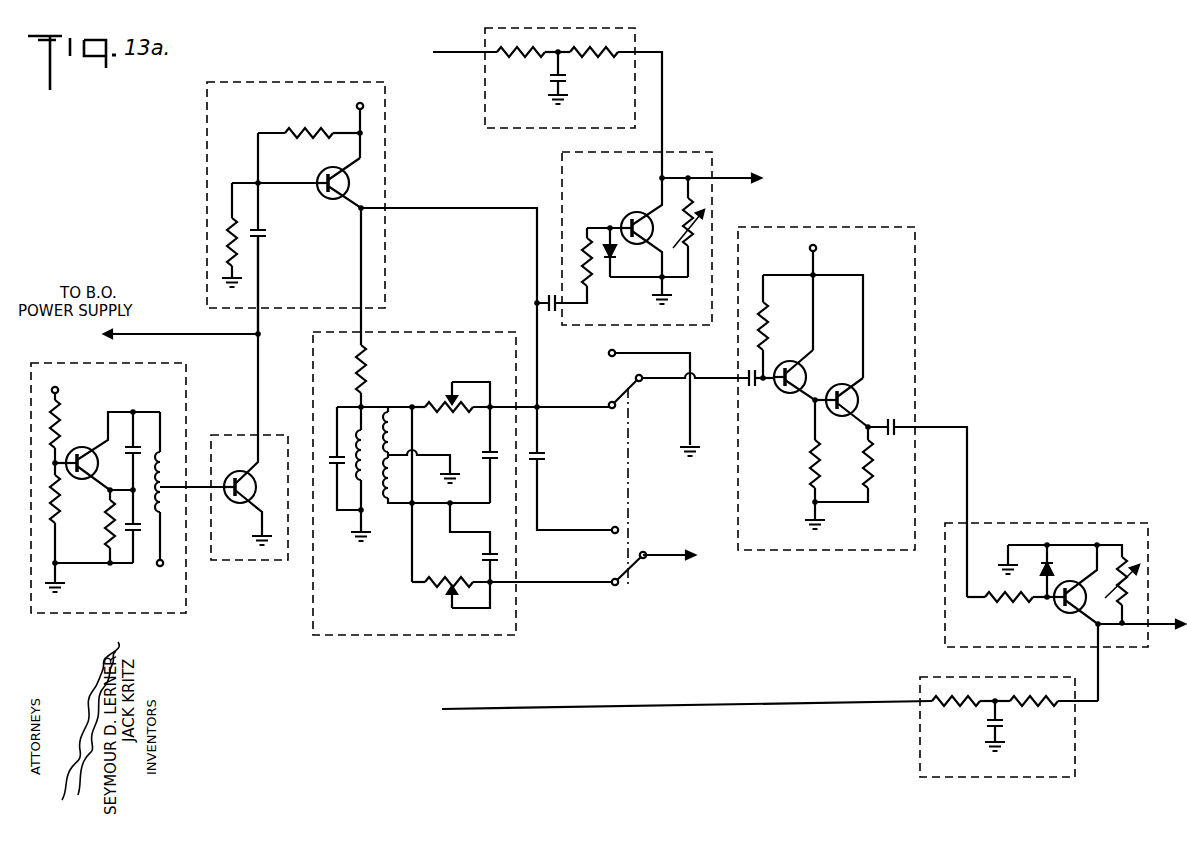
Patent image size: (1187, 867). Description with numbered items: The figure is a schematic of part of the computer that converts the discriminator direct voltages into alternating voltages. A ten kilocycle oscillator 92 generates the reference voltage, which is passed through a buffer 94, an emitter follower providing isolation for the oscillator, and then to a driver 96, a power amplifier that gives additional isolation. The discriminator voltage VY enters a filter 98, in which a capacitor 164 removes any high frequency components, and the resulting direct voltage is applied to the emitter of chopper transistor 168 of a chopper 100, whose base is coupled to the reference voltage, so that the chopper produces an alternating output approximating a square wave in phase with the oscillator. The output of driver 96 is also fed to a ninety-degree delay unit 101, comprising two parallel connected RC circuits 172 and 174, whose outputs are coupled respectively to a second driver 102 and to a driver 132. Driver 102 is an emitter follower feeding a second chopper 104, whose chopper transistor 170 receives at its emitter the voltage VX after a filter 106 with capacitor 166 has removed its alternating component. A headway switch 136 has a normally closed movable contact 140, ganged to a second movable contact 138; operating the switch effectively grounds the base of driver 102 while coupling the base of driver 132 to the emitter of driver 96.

The ten kc. oscillator 92 is at (82, 363).
The buffer 94 is at (289, 562).
The driver 96 is at (386, 183).
The filter 98 is at (537, 93).
The chopper 100 is at (647, 221).
The ninety-degree delay unit 101 is at (414, 496).
The second driver 102 is at (915, 230).
The second chopper 104 is at (1065, 598).
The filter 106 is at (770, 737).
The driver 132 is at (686, 576).
The headway switch 136 is at (685, 498).
The movable contact 138 is at (620, 392).
The movable contact 140 is at (622, 568).
The capacitor 164 is at (535, 78).
The capacitor 166 is at (990, 726).
The chopper transistor 168 is at (640, 211).
The chopper transistor 170 is at (1072, 612).
The RC circuit 172 is at (462, 442).
The RC circuit 174 is at (461, 564).